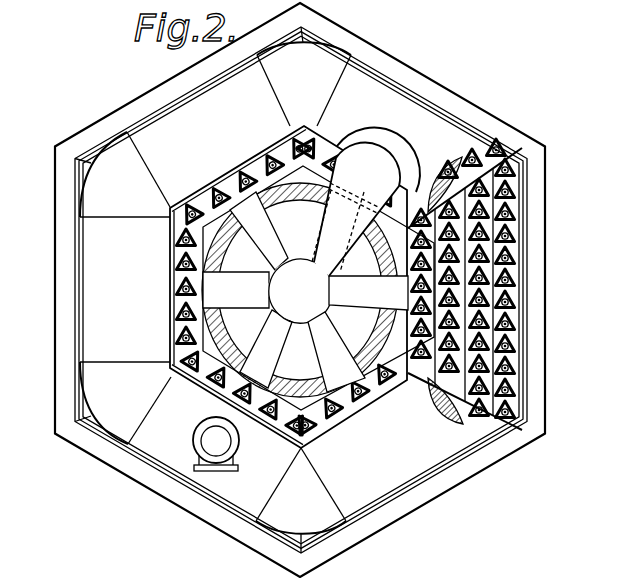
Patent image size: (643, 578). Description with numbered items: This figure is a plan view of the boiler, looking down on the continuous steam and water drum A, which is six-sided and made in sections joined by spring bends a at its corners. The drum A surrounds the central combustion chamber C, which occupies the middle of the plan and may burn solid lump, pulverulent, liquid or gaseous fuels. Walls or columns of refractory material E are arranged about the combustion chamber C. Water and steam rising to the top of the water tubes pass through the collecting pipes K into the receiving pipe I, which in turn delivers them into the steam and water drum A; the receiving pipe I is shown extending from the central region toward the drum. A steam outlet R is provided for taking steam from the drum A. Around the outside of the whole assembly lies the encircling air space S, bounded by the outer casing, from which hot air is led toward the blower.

The encircling air space S is at (463, 502).
The continuous steam and water drum A is at (239, 288).
The spring bend a is at (269, 290).
The receiving pipe I is at (366, 201).
The wall or column of refractory material E is at (300, 290).
The central combustion chamber C is at (283, 323).
The collecting pipe K is at (358, 334).
The steam outlet R is at (201, 444).